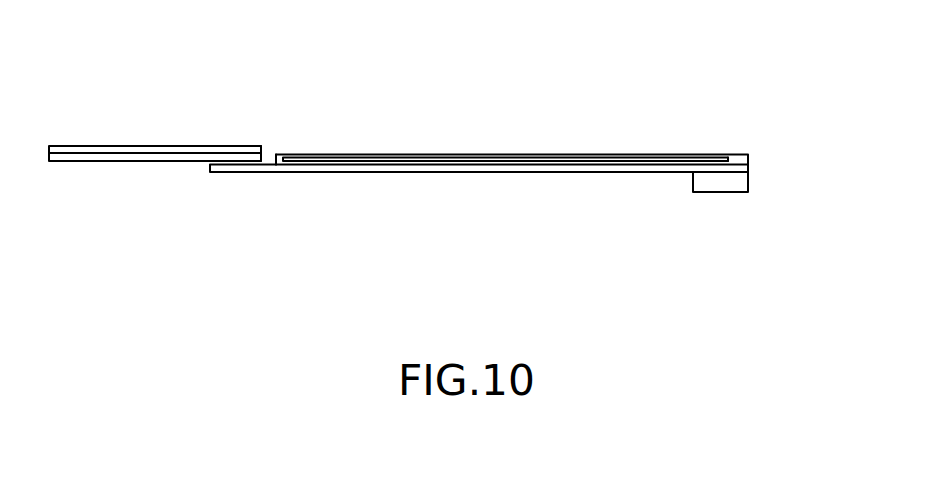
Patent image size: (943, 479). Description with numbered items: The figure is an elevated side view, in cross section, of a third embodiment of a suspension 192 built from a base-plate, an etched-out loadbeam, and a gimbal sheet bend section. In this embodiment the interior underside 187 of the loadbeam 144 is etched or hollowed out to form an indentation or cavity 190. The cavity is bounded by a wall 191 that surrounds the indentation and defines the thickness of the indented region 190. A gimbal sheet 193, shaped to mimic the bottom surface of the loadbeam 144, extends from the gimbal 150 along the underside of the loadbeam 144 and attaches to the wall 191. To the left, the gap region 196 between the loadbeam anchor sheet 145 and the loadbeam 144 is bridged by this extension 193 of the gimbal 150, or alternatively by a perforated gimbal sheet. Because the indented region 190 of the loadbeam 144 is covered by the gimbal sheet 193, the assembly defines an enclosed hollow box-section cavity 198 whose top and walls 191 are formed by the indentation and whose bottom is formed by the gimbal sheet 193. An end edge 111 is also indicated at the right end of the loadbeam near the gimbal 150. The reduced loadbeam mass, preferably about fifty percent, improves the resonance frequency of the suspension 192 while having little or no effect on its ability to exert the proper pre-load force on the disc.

The third embodiment of the suspension 192 is at (338, 86).
The loadbeam anchor sheet 145 is at (85, 162).
The gap region 196 is at (268, 154).
The wall 191 is at (275, 150).
The loadbeam 144 is at (447, 154).
The indentation or cavity 190 is at (690, 160).
The end edge 111 is at (745, 160).
The interior underside 187 is at (457, 164).
The gimbal sheet 193 is at (555, 172).
The enclosed hollow box-section cavity 198 is at (623, 167).
The gimbal 150 is at (738, 166).